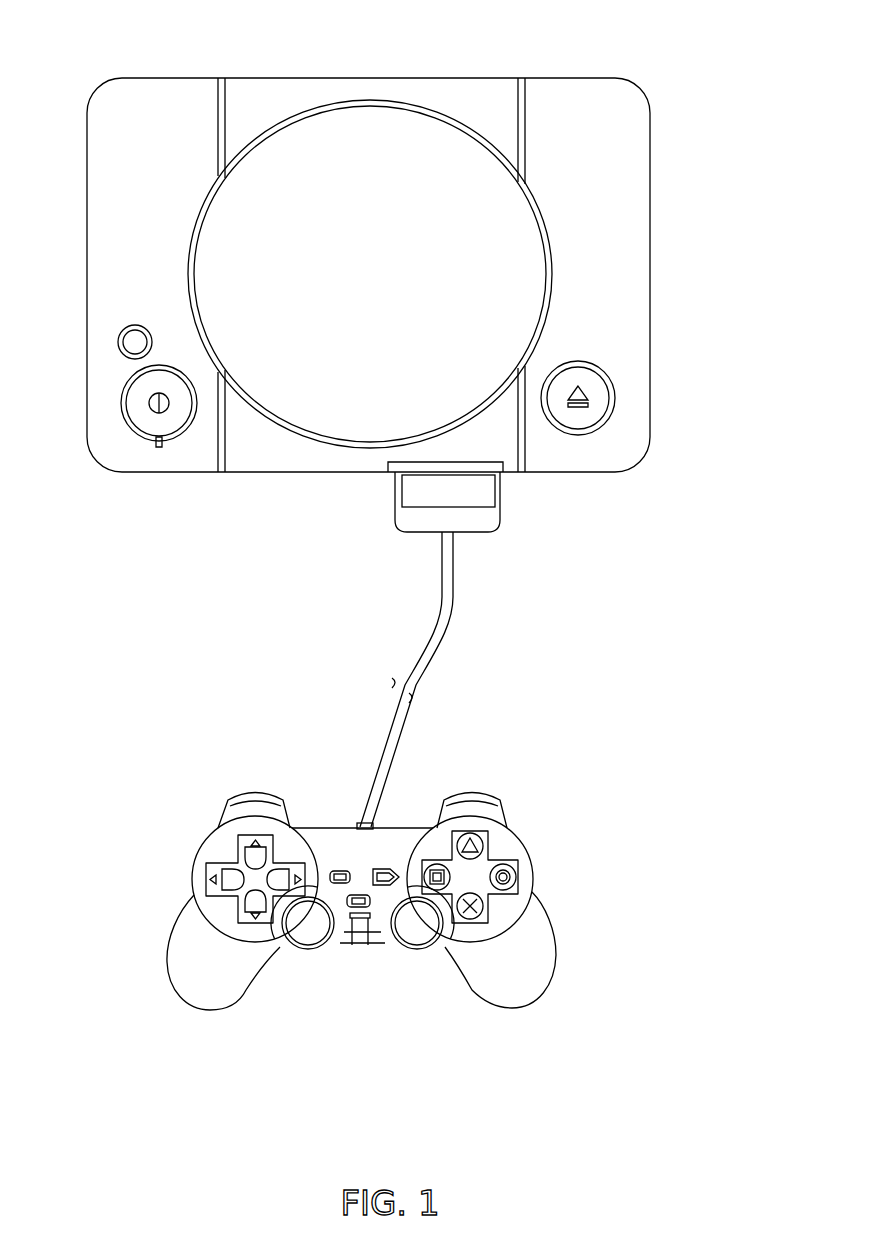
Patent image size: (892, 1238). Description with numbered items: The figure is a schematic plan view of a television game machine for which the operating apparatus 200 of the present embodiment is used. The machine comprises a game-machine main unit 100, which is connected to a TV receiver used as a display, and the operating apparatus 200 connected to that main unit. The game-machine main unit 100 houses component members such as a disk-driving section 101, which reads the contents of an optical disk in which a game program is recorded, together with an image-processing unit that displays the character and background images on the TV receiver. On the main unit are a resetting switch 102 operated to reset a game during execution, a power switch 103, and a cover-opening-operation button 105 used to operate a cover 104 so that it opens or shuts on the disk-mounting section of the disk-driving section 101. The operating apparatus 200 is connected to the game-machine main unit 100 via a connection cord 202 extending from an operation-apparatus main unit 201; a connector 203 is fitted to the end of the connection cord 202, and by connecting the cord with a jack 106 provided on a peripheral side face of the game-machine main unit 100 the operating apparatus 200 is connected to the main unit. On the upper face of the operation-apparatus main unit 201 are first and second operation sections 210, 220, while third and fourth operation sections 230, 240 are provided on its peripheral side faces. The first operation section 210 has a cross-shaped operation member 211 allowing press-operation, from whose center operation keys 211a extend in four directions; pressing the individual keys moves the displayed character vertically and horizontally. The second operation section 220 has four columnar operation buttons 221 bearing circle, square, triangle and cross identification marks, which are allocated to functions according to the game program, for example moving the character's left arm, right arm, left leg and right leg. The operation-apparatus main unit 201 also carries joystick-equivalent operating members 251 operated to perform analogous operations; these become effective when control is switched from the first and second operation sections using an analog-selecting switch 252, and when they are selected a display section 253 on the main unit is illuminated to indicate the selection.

The game-machine main unit 100 is at (655, 181).
The disk-driving section 101 is at (430, 148).
The resetting switch 102 is at (139, 342).
The power switch 103 is at (143, 425).
The cover 104 is at (361, 130).
The cover-opening-operation button 105 is at (600, 387).
The jack 106 is at (432, 472).
The operating apparatus 200 is at (371, 878).
The operation-apparatus main unit 201 is at (553, 983).
The connection cord 202 is at (425, 657).
The connector 203 is at (498, 527).
The first operation section 210 is at (218, 856).
The cross-shaped operation member 211 is at (212, 865).
The operation keys 211a is at (282, 885).
The second operation section 220 is at (498, 885).
The operation buttons 221 is at (462, 837).
The third operation section 230 is at (237, 780).
The fourth operation section 240 is at (487, 780).
The joystick-equivalent operating members 251 is at (307, 932).
The analog-selecting switch 252 is at (352, 910).
The display section 253 is at (368, 920).